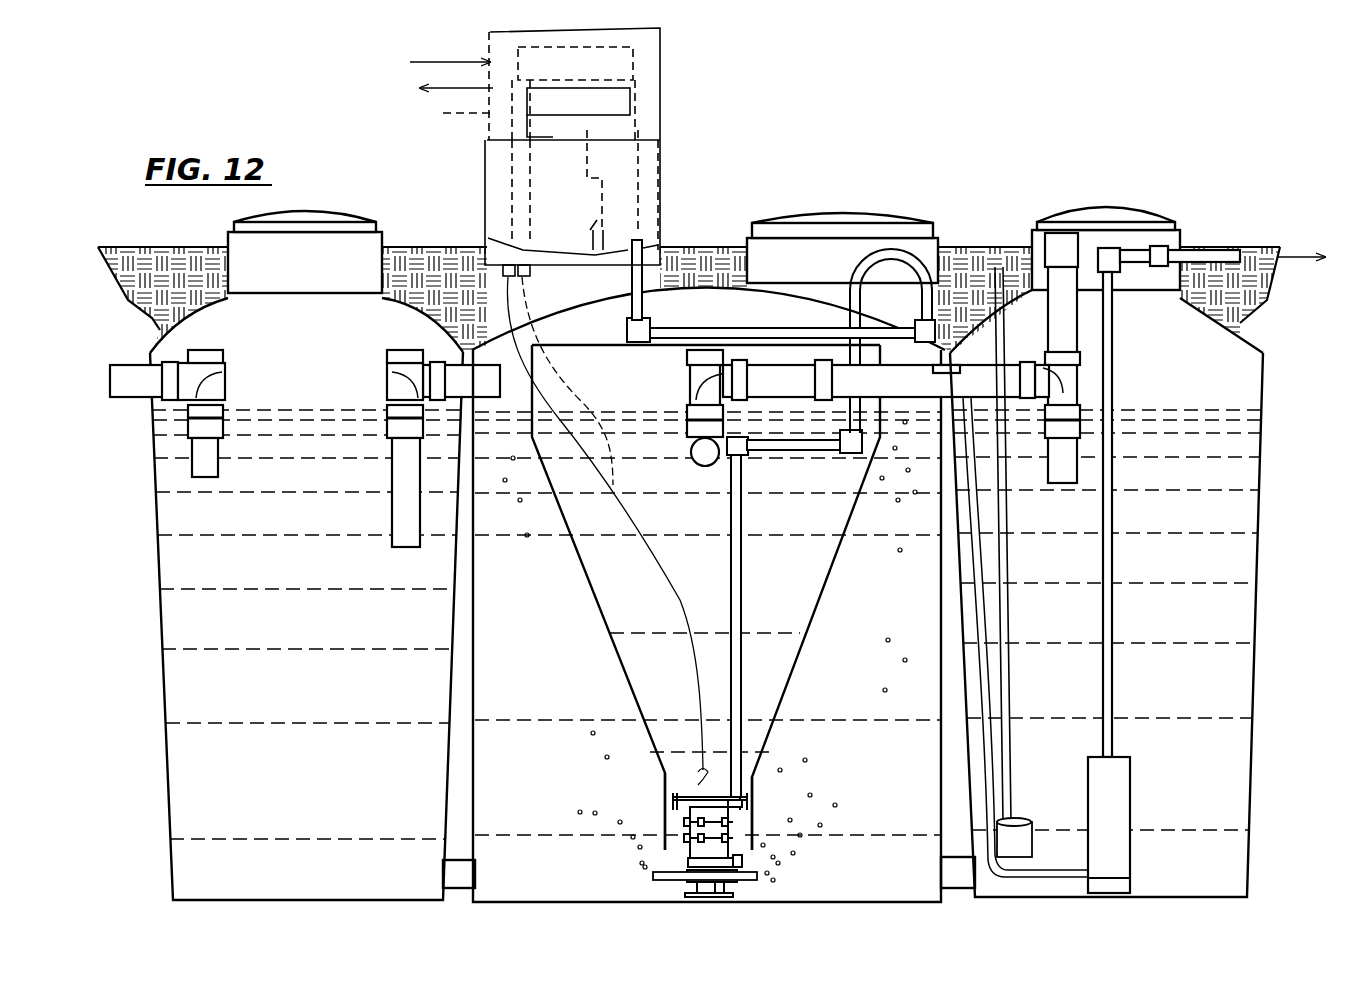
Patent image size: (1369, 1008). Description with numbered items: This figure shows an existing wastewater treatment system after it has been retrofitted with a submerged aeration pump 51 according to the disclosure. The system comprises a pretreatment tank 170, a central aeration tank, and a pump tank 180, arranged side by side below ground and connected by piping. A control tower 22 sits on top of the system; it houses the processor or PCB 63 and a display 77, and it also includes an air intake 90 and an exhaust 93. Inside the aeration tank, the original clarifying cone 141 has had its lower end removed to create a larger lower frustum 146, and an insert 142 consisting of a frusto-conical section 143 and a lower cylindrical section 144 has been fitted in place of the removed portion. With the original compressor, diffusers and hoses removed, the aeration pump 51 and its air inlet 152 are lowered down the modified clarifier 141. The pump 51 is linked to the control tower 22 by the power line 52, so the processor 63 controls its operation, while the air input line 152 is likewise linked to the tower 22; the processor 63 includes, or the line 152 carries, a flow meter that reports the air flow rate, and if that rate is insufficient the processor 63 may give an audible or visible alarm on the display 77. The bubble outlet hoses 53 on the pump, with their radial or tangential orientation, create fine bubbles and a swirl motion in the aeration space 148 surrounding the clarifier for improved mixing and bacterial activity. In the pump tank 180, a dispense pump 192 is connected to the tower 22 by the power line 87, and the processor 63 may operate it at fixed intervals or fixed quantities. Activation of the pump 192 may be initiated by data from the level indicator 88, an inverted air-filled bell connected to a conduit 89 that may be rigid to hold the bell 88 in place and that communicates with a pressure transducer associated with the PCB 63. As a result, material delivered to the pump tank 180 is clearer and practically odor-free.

The control tower 22 is at (662, 112).
The display 77 is at (633, 63).
The air intake 90 is at (443, 53).
The exhaust 93 is at (445, 97).
The processor 63 is at (449, 113).
The pretreatment tank 170 is at (156, 627).
The pump tank 180 is at (1263, 565).
The clarifying cone 141 is at (590, 587).
The insert 142 is at (652, 633).
The frusto-conical section 143 is at (640, 660).
The lower cylindrical section 144 is at (667, 813).
The larger lower frustum 146 is at (763, 760).
The aeration space 148 is at (896, 611).
The air inlet 152 is at (742, 552).
The aeration pump 51 is at (687, 853).
The power line 52 is at (635, 452).
The bubble outlet hoses 53 is at (742, 882).
The power line 87 is at (982, 722).
The level indicator 88 is at (1025, 837).
The conduit 89 is at (1010, 627).
The dispense pump 192 is at (1132, 800).